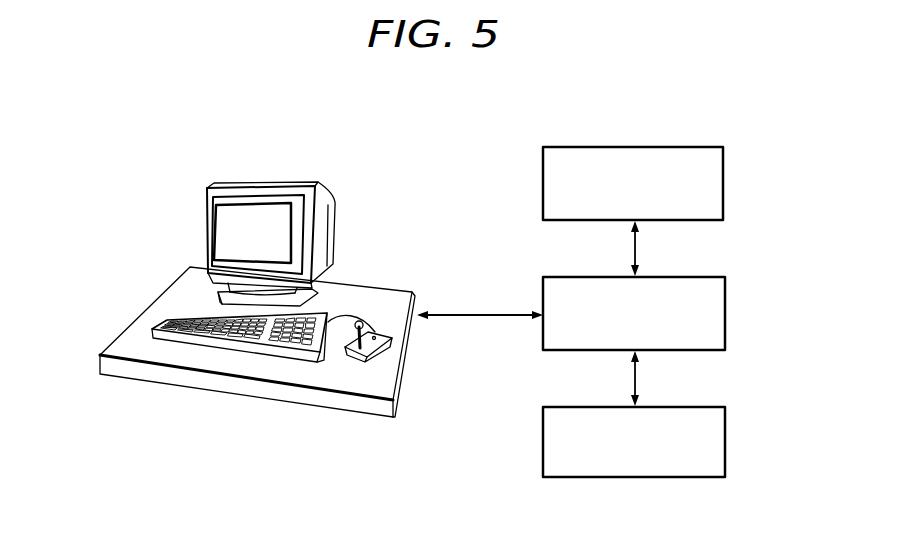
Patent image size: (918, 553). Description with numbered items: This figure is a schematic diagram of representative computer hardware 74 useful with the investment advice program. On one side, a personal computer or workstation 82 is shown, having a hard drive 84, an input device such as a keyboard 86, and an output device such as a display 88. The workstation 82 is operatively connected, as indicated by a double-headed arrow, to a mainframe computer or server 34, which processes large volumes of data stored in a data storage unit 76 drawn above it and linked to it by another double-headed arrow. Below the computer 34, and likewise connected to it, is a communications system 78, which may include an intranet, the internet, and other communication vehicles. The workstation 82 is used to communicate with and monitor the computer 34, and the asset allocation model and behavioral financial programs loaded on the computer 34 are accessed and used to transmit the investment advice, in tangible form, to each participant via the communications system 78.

The computer hardware 74 is at (425, 162).
The personal computer or workstation 82 is at (161, 207).
The display 88 is at (303, 187).
The keyboard 86 is at (167, 320).
The hard drive 84 is at (190, 382).
The data storage unit 76 is at (723, 188).
The mainframe computer or server 34 is at (725, 316).
The communications system 78 is at (725, 443).